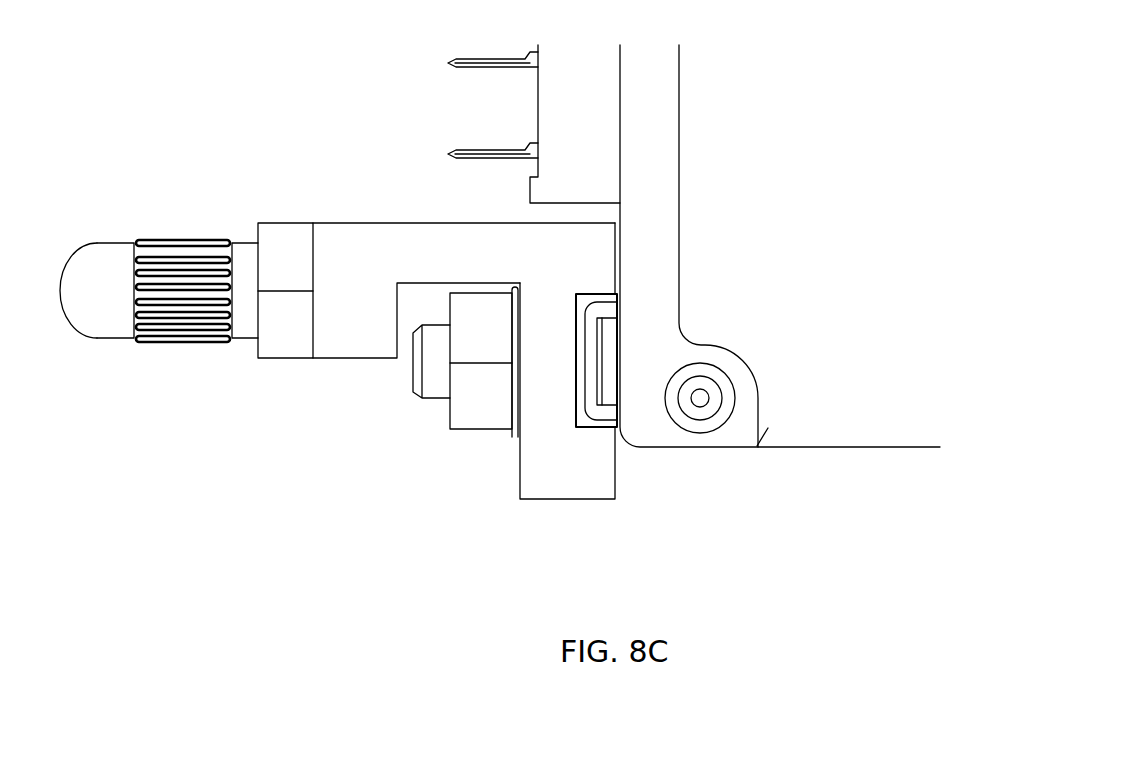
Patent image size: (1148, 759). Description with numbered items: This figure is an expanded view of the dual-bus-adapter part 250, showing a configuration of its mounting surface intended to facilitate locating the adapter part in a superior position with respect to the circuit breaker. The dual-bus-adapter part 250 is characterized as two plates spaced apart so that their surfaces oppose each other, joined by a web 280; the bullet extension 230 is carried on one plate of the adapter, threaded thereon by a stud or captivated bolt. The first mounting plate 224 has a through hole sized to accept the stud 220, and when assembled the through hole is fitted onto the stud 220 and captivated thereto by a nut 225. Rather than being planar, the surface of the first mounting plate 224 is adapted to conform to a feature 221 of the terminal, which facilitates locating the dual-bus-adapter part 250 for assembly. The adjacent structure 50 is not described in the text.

The frame 50 is at (780, 246).
The stud 220 is at (430, 360).
The feature of the terminal 221 is at (607, 308).
The first mounting plate 224 is at (613, 465).
The nut 225 is at (493, 417).
The bullet extension 230 is at (195, 238).
The dual-bus-adapter part 250 is at (439, 201).
The web 280 is at (392, 223).